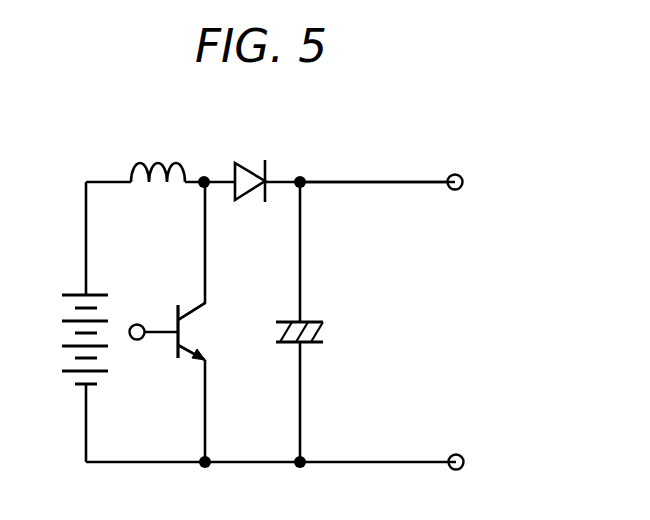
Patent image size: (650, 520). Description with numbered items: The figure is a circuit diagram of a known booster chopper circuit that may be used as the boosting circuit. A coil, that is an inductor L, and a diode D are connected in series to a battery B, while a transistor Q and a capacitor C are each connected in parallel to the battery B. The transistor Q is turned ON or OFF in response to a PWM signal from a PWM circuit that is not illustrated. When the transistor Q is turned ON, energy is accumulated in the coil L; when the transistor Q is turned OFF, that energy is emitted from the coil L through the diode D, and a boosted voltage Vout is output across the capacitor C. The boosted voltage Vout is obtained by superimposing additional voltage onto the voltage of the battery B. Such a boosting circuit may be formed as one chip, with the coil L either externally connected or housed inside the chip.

The coil (inductor) L is at (158, 153).
The diode D is at (250, 163).
The boosted voltage Vout is at (393, 160).
The battery B is at (70, 339).
The transistor Q is at (168, 319).
The capacitor C is at (316, 334).